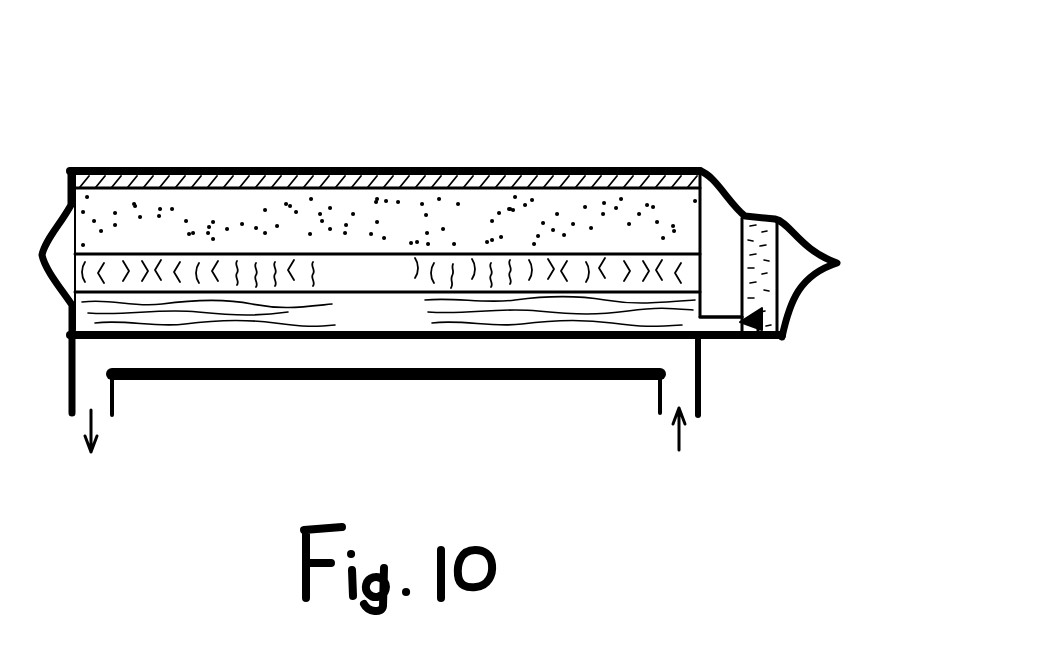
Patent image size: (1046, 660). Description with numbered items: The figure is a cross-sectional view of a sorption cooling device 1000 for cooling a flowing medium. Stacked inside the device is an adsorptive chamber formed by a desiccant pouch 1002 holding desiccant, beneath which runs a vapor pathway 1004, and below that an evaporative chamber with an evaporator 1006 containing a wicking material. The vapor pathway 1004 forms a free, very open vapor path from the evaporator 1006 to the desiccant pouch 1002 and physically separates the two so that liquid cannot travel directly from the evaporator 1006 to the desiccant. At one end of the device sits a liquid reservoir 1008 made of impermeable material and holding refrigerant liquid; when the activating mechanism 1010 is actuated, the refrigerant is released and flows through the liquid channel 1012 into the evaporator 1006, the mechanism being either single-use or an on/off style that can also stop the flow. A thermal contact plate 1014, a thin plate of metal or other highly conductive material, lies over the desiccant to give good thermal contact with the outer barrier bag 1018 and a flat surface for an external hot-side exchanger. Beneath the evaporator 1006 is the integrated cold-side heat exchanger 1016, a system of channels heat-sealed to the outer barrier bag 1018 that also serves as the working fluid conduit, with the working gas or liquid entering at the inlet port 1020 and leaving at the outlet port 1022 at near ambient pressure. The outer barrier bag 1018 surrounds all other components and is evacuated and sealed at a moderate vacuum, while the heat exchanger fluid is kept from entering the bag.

The cooling device 1000 is at (148, 138).
The desiccant pouch 1002 is at (397, 236).
The vapor pathway 1004 is at (400, 284).
The evaporator 1006 is at (405, 326).
The liquid reservoir 1008 is at (773, 217).
The activating mechanism 1010 is at (753, 340).
The liquid channel 1012 is at (717, 340).
The thermal contact plate 1014 is at (703, 176).
The integrated cold-side heat exchanger 1016 is at (397, 366).
The outer barrier bag 1018 is at (805, 290).
The inlet port 1020 is at (650, 405).
The outlet port 1022 is at (112, 400).